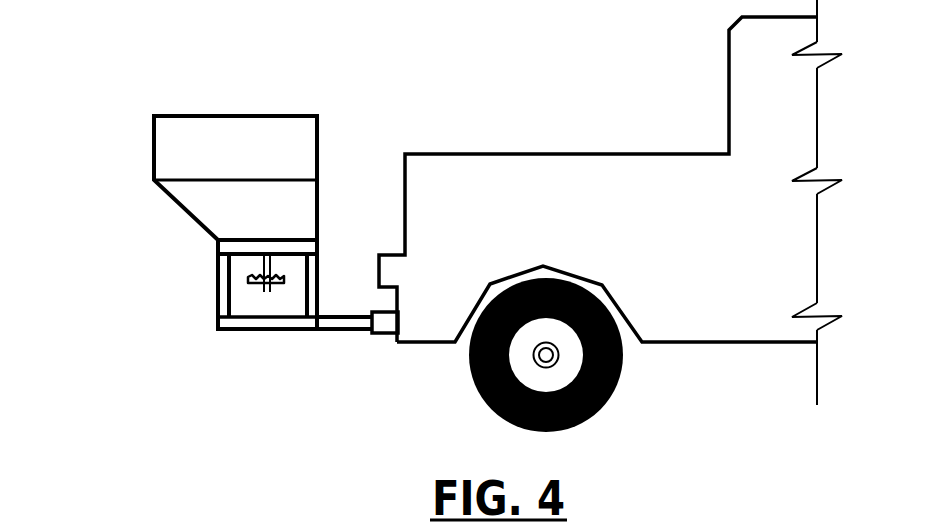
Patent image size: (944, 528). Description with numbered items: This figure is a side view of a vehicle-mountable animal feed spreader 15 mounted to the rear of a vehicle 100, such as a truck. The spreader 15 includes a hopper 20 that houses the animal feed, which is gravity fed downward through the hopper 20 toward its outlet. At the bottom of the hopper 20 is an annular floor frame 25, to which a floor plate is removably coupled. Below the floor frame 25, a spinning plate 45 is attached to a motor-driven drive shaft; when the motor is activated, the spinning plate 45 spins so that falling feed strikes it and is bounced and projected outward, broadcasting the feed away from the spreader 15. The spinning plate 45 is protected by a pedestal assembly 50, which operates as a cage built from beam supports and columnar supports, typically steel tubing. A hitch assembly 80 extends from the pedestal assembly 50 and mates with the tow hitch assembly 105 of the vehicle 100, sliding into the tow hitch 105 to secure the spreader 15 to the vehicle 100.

The vehicle-mountable spreader 15 is at (98, 116).
The hopper 20 is at (167, 166).
The annular floor frame 25 is at (223, 249).
The spinning plate 45 is at (252, 278).
The pedestal assembly 50 is at (223, 296).
The hitch assembly 80 is at (335, 327).
The vehicle 100 is at (537, 173).
The tow hitch assembly 105 is at (380, 330).